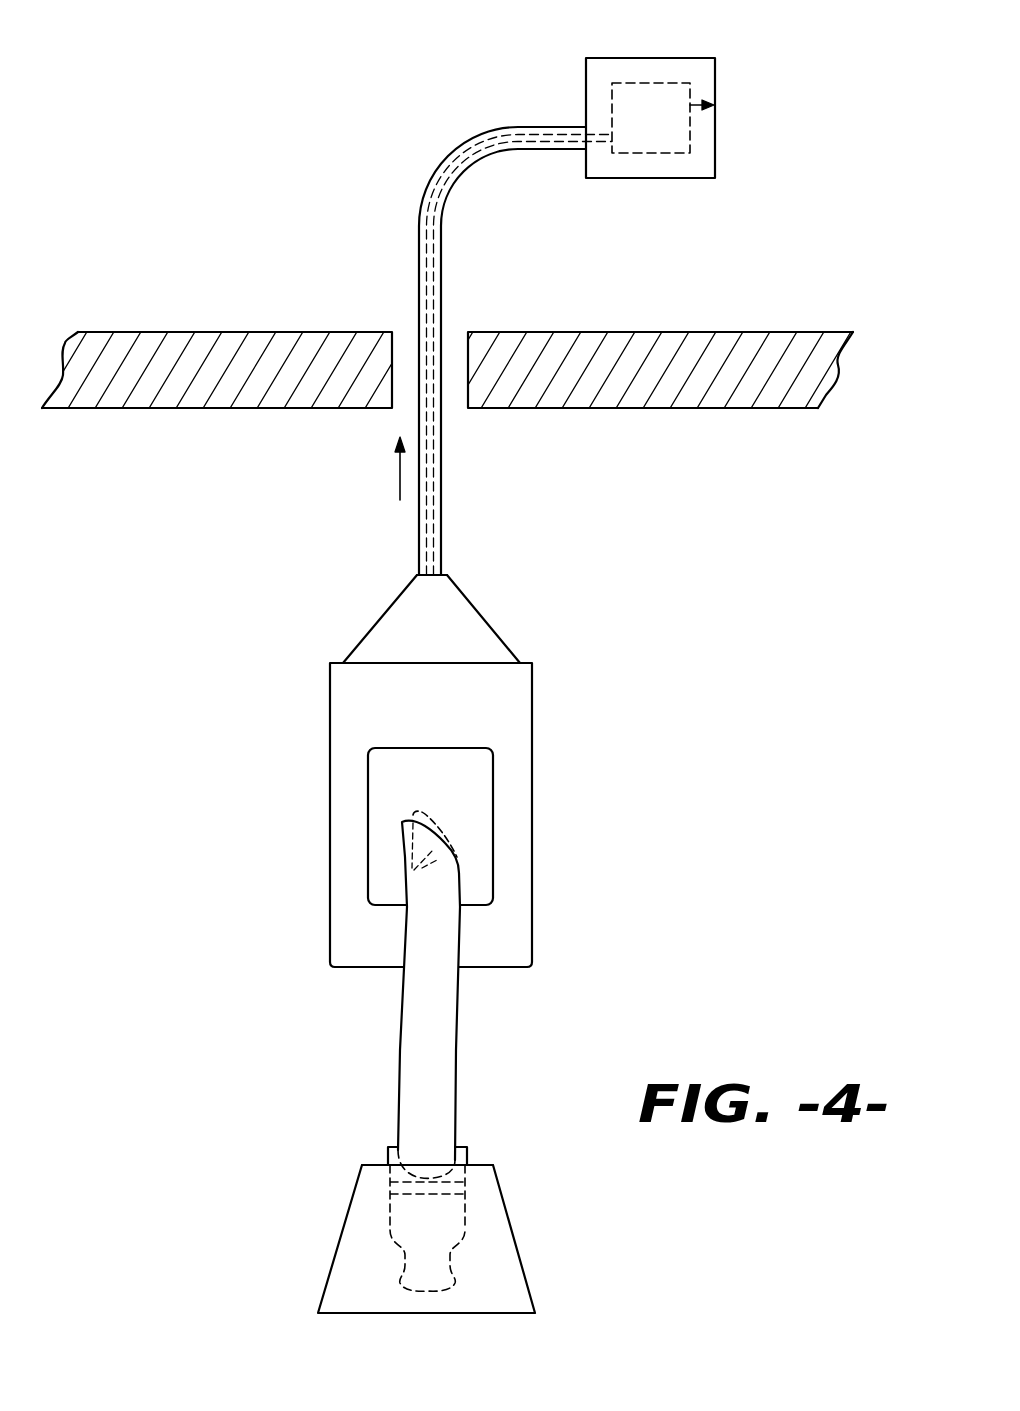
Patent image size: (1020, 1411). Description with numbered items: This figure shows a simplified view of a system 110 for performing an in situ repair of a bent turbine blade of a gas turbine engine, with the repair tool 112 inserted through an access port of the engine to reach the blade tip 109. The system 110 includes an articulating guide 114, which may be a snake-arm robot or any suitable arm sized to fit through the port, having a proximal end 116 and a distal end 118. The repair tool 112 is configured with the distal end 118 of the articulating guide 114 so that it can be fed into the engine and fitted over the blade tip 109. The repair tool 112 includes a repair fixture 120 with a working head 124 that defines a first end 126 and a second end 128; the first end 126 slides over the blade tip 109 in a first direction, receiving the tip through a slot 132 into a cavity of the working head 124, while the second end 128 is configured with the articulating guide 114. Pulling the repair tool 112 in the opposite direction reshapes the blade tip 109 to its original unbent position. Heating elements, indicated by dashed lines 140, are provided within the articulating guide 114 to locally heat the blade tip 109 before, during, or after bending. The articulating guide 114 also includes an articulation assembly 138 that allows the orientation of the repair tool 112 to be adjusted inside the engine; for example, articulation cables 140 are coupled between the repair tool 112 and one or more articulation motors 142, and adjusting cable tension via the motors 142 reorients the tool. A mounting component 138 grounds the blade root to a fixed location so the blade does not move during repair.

The blade tip 109 is at (400, 860).
The system 110 is at (417, 75).
The repair tool 112 is at (532, 772).
The articulating guide 114 is at (432, 175).
The proximal end 116 is at (552, 161).
The distal end 118 is at (405, 560).
The repair fixture 120 is at (533, 880).
The working head 124 is at (358, 928).
The first end 126 is at (367, 970).
The second end 128 is at (375, 622).
The slot 132 is at (452, 950).
The articulation assembly 138 is at (716, 105).
The articulation cables 140 is at (436, 515).
The articulation motors 142 is at (667, 153).